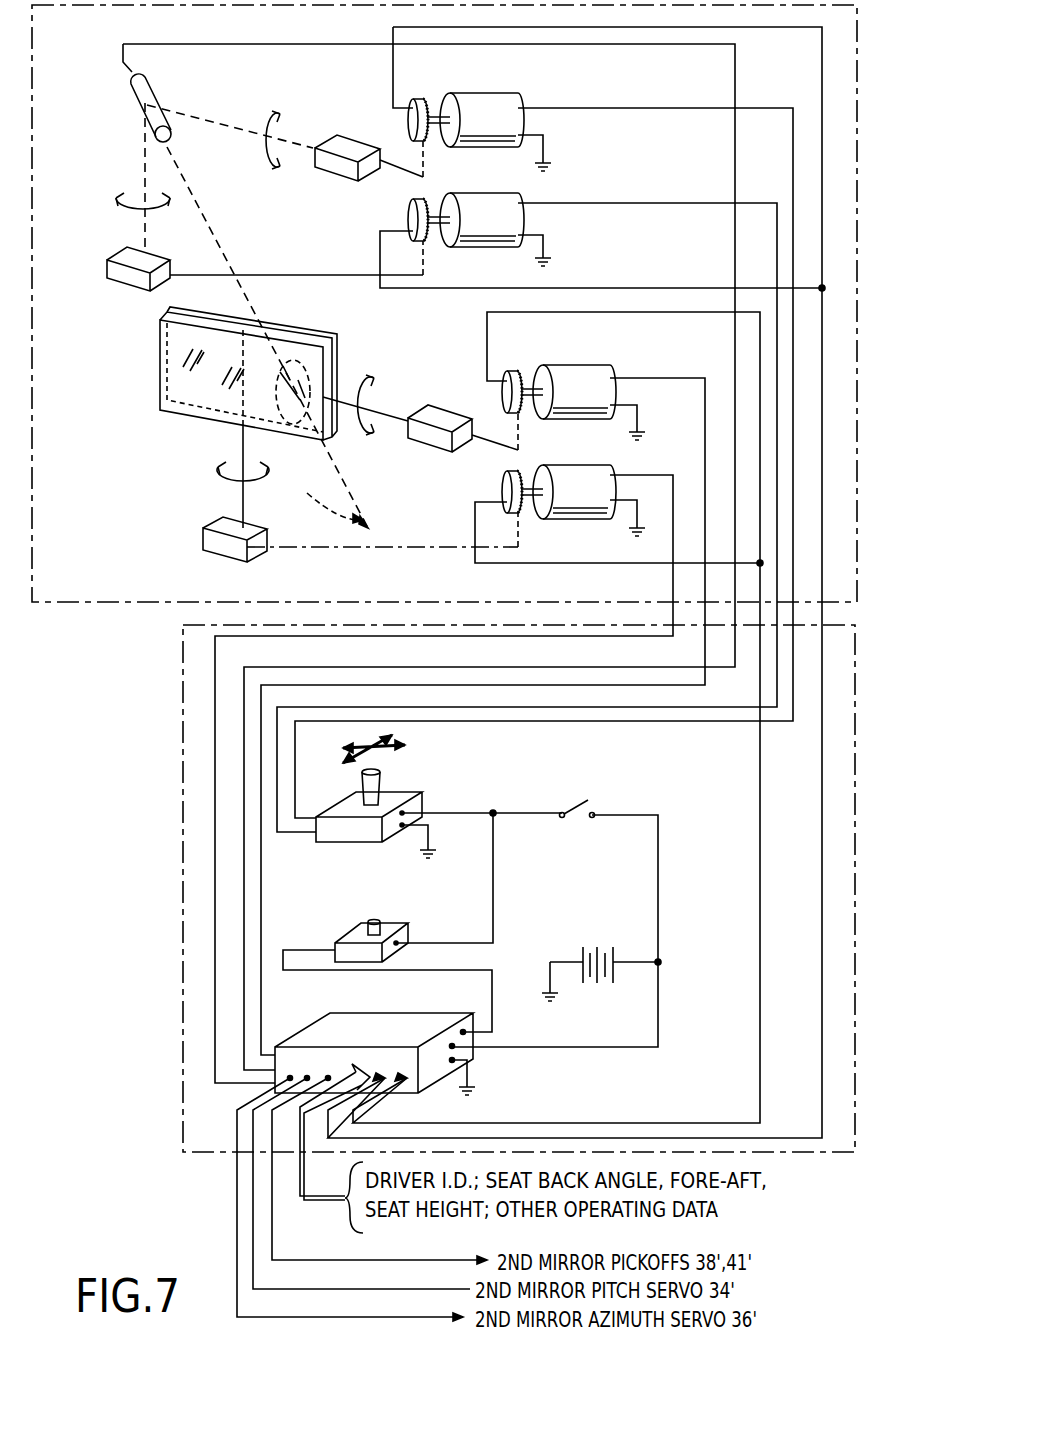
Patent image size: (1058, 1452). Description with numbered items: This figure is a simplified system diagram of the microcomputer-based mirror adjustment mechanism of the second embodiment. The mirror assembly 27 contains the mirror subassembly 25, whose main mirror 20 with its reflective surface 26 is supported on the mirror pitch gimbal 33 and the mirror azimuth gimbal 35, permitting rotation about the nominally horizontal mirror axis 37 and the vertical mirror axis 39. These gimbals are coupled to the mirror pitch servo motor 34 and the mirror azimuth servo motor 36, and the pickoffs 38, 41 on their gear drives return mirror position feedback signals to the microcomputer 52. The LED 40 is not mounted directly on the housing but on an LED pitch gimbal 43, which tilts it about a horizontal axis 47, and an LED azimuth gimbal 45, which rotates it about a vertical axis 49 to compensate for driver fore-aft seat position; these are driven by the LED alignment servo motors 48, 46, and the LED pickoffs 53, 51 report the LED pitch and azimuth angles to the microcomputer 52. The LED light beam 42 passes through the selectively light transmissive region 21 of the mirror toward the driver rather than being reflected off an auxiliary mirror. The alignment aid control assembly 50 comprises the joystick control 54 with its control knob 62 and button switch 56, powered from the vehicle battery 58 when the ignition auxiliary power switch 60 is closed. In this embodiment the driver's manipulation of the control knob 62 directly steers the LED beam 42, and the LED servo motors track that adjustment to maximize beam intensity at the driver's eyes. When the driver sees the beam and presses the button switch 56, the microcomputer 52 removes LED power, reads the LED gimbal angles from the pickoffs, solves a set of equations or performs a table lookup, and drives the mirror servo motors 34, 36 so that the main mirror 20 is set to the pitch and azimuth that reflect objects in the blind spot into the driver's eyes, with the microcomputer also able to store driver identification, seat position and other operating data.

The main mirror 20 is at (163, 305).
The selectively light transmissive region 21 is at (303, 348).
The mirror subassembly 25 is at (130, 363).
The mirror reflective surface 26 is at (197, 387).
The mirror assembly 27 is at (862, 440).
The mirror pitch gimbal 33 is at (442, 407).
The mirror pitch servo motor 34 is at (587, 365).
The mirror azimuth gimbal 35 is at (203, 545).
The mirror azimuth servo motor 36 is at (577, 520).
The horizontal mirror axis 37 is at (380, 378).
The mirror pitch position pickoff 38 is at (500, 372).
The vertical mirror axis 39 is at (217, 471).
The LED 40 is at (140, 103).
The mirror azimuth position pickoff 41 is at (503, 497).
The LED light beam 42 is at (329, 495).
The LED pitch gimbal 43 is at (348, 143).
The LED azimuth gimbal 45 is at (110, 273).
The LED alignment servo motor 46 is at (484, 233).
The horizontal axis 47 is at (280, 112).
The LED pitch pickoff 48 is at (495, 93).
The vertical axis 49 is at (117, 198).
The alignment aid control assembly 50 is at (183, 878).
The LED azimuth pickoff 51 is at (407, 227).
The microcomputer 52 is at (415, 1012).
The light source pitch pickoff 53 is at (405, 110).
The joystick control 54 is at (417, 792).
The button switch 56 is at (400, 925).
The vehicle battery 58 is at (602, 947).
The ignition auxiliary power switch 60 is at (603, 790).
The control knob 62 is at (362, 782).